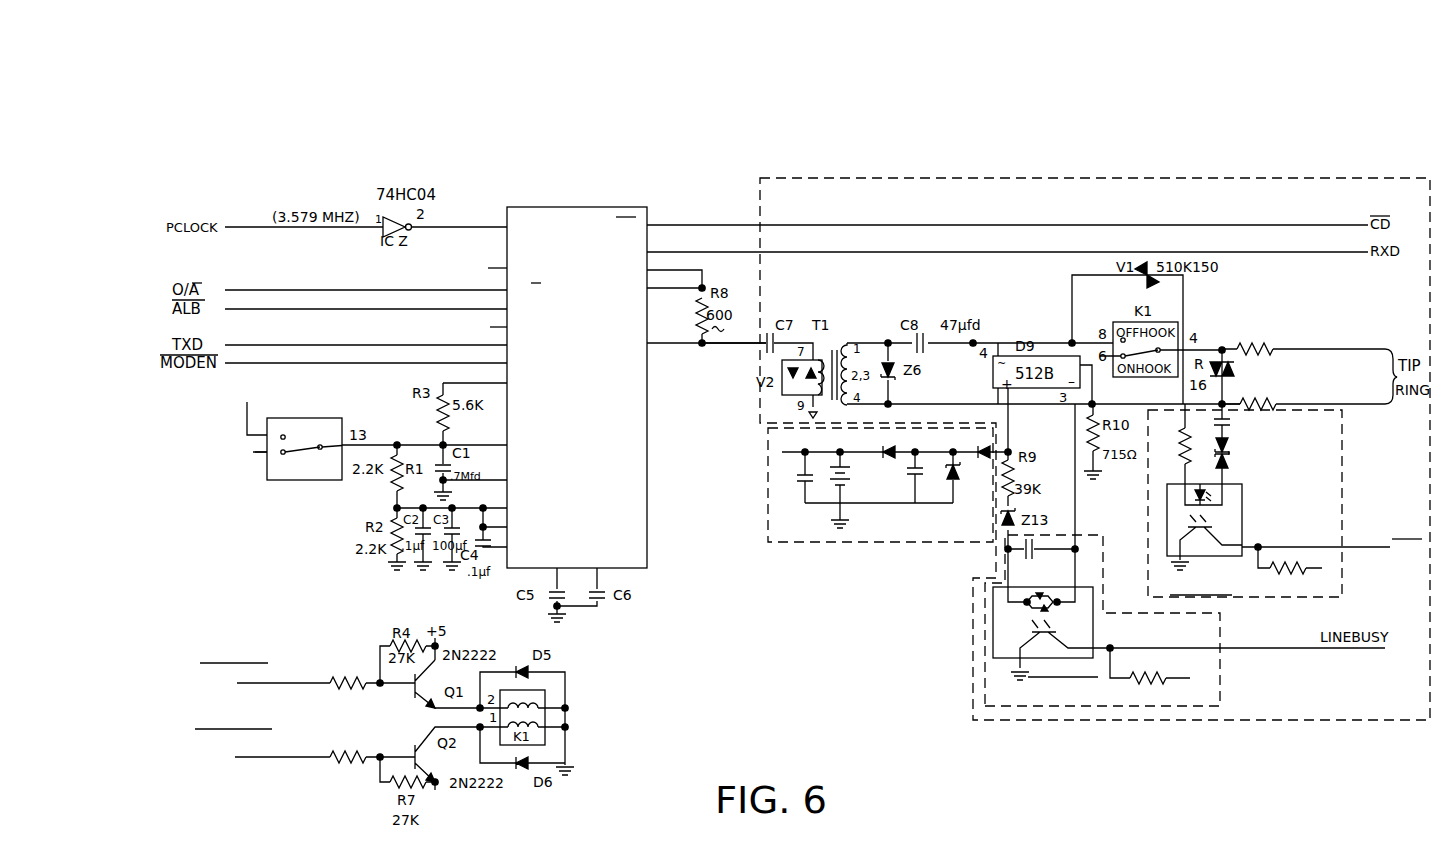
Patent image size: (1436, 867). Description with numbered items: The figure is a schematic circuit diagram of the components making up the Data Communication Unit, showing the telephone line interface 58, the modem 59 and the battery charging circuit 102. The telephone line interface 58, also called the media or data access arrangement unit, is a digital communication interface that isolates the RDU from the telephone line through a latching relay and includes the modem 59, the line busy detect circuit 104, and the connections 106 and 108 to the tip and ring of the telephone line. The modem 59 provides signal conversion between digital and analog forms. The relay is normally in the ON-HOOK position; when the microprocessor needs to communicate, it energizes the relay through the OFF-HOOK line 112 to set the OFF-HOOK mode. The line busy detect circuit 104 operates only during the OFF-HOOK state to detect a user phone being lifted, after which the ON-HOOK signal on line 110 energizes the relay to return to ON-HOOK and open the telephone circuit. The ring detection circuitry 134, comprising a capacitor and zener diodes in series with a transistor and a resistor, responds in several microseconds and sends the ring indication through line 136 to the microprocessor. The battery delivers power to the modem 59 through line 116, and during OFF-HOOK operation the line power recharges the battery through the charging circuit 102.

The telephone line interface 58 is at (1110, 158).
The modem 59 is at (647, 492).
The battery charging circuit 102 is at (882, 542).
The line busy detect circuit 104 is at (1222, 706).
The connection to tip of telephone line 106 is at (1349, 354).
The connection to ring of telephone line 108 is at (1358, 404).
The ON-HOOK line 110 is at (319, 681).
The OFF-HOOK line 112 is at (286, 760).
The power line to modem 116 is at (247, 424).
The ring detection circuitry 134 is at (1343, 502).
The ring signal line 136 is at (1347, 547).